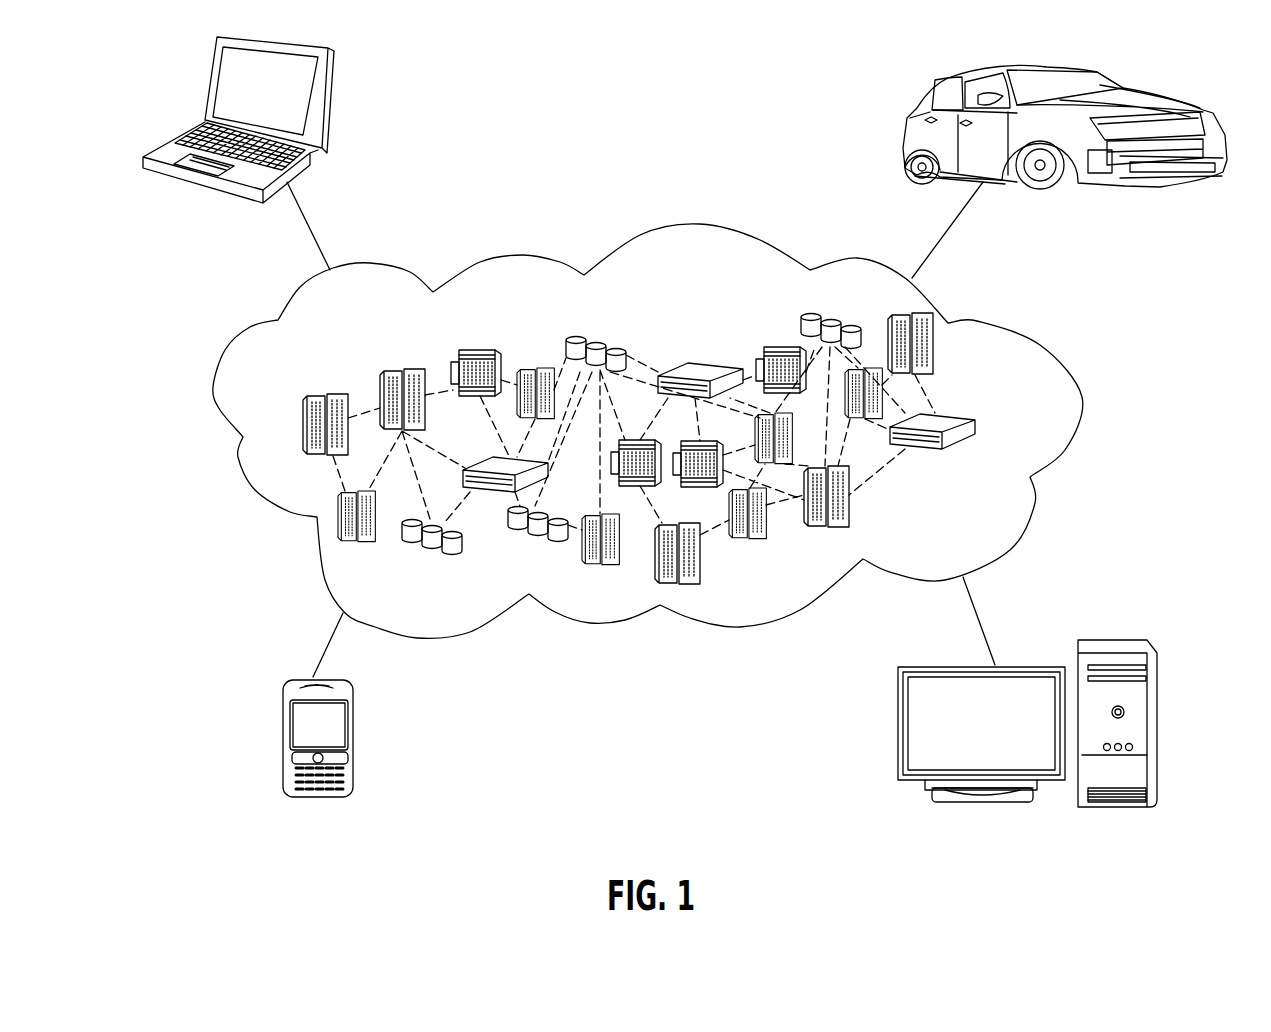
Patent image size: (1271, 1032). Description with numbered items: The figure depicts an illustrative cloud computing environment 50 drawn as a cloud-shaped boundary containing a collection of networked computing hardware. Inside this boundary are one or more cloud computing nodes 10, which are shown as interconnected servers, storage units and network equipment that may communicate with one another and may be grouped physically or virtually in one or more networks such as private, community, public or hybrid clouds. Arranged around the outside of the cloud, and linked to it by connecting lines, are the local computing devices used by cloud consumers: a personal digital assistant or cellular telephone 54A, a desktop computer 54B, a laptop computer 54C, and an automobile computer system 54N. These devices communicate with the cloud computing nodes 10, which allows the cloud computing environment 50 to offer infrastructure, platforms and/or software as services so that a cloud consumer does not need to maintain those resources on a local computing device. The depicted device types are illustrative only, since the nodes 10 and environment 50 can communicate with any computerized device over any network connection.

The cloud computing environment 50 is at (1038, 340).
The cloud computing nodes 10 is at (1013, 427).
The personal digital assistant (PDA) or cellular telephone 54A is at (282, 742).
The desktop computer 54B is at (1122, 640).
The laptop computer 54C is at (323, 107).
The automobile computer system 54N is at (912, 115).